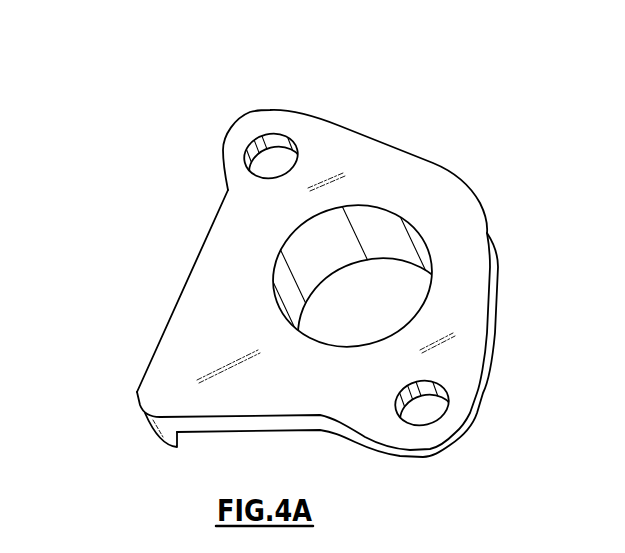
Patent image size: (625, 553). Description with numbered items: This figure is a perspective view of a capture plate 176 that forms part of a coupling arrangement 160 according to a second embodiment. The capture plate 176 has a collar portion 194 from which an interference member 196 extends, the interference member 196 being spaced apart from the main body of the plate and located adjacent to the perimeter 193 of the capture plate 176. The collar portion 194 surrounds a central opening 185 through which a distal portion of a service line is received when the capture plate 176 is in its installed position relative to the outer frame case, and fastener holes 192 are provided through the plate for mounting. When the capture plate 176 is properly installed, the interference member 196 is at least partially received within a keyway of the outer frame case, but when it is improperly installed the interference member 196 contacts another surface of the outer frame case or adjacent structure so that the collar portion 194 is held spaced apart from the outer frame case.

The coupling arrangement 160 is at (127, 58).
The capture plate 176 is at (137, 194).
The central bore 185 is at (321, 347).
The fastener holes 192 is at (284, 141).
The perimeter 193 is at (136, 384).
The collar portion 194 is at (170, 352).
The interference member 196 is at (152, 440).